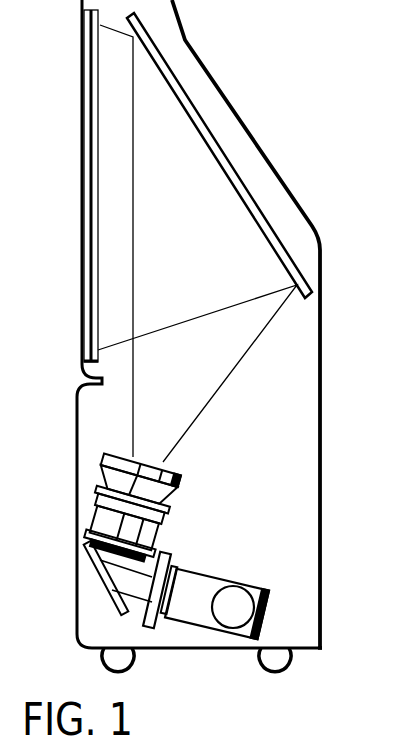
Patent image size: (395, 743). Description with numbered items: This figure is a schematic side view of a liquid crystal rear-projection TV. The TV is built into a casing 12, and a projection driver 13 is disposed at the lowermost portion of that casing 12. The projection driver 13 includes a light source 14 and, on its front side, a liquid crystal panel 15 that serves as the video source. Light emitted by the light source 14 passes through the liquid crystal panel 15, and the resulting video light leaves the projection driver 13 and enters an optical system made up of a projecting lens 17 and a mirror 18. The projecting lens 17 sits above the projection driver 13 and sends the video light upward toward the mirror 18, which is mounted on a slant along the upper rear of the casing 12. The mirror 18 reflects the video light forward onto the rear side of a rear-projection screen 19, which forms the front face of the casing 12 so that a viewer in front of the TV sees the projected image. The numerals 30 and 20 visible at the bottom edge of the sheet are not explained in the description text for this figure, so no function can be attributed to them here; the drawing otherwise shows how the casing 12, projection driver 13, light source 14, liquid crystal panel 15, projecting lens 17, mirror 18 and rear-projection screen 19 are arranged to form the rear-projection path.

The casing 12 is at (322, 405).
The projection driver 13 is at (214, 570).
The light source 14 is at (256, 613).
The liquid crystal panel 15 is at (152, 620).
The projecting lens 17 is at (104, 455).
The mirror 18 is at (214, 134).
The rear-projection screen 19 is at (82, 141).
The reference numeral 30 is at (235, 731).
The reference numeral 20 is at (362, 731).